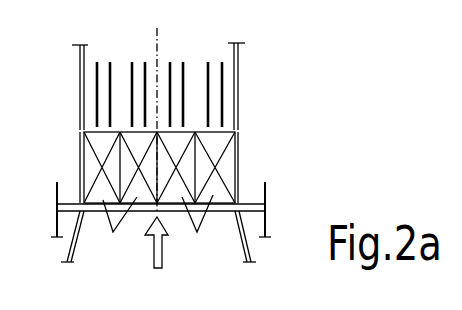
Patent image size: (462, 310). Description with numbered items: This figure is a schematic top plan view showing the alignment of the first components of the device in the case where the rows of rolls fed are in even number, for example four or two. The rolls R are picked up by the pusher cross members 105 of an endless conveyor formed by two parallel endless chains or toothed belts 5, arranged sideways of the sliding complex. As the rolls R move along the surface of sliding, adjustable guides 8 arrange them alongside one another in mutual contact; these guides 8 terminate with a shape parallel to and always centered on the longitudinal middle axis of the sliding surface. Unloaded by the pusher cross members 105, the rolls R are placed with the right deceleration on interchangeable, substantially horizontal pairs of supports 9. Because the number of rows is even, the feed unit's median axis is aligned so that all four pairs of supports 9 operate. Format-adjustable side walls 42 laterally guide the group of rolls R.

The pairs of supports 9 is at (113, 62).
The format-adjustable side walls 42 is at (80, 93).
The chains or toothed belts 5 is at (55, 186).
The adjustable guides 8 is at (66, 254).
The pusher cross members 105 is at (223, 211).
The rolls R is at (158, 228).